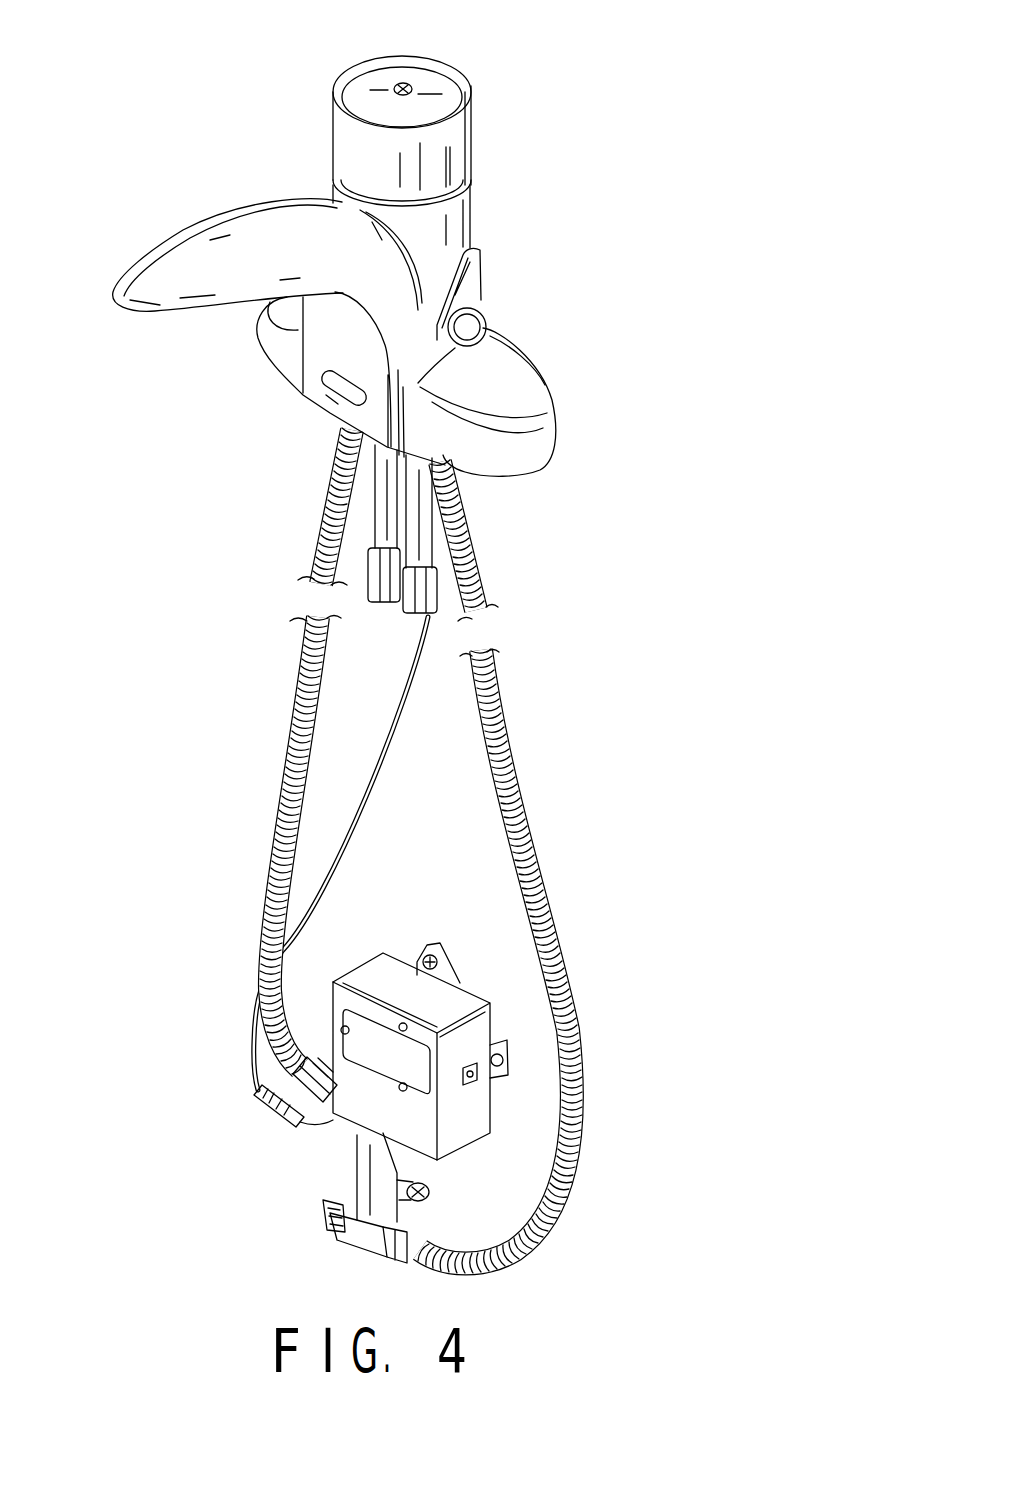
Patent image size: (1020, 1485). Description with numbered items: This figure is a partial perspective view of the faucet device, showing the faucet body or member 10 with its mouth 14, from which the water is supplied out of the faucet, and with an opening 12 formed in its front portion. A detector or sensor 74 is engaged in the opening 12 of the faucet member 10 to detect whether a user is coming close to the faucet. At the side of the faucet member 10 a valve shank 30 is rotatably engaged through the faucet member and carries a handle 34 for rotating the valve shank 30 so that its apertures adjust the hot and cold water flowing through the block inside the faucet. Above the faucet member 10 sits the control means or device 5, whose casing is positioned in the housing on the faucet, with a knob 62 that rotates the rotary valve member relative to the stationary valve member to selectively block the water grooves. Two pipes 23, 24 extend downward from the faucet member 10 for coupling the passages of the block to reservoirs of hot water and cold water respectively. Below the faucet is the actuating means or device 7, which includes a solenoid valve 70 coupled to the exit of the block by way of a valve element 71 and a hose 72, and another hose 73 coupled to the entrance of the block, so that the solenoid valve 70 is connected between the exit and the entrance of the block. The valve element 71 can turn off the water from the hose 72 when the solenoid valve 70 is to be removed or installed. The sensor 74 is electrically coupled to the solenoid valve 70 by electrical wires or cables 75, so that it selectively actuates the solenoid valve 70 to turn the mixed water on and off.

The control device 5 is at (346, 241).
The knob 62 is at (443, 143).
The handle 34 is at (470, 273).
The valve shank 30 is at (470, 327).
The faucet body 10 is at (510, 397).
The mouth 14 is at (142, 338).
The opening 12 is at (322, 376).
The sensor 74 is at (333, 392).
The pipe 23 is at (383, 505).
The pipe 24 is at (412, 510).
The hose 72 is at (548, 915).
The hose 73 is at (258, 942).
The electrical cables 75 is at (256, 1073).
The actuating device 7 is at (459, 1103).
The solenoid valve 70 is at (352, 1107).
The valve element 71 is at (363, 1183).